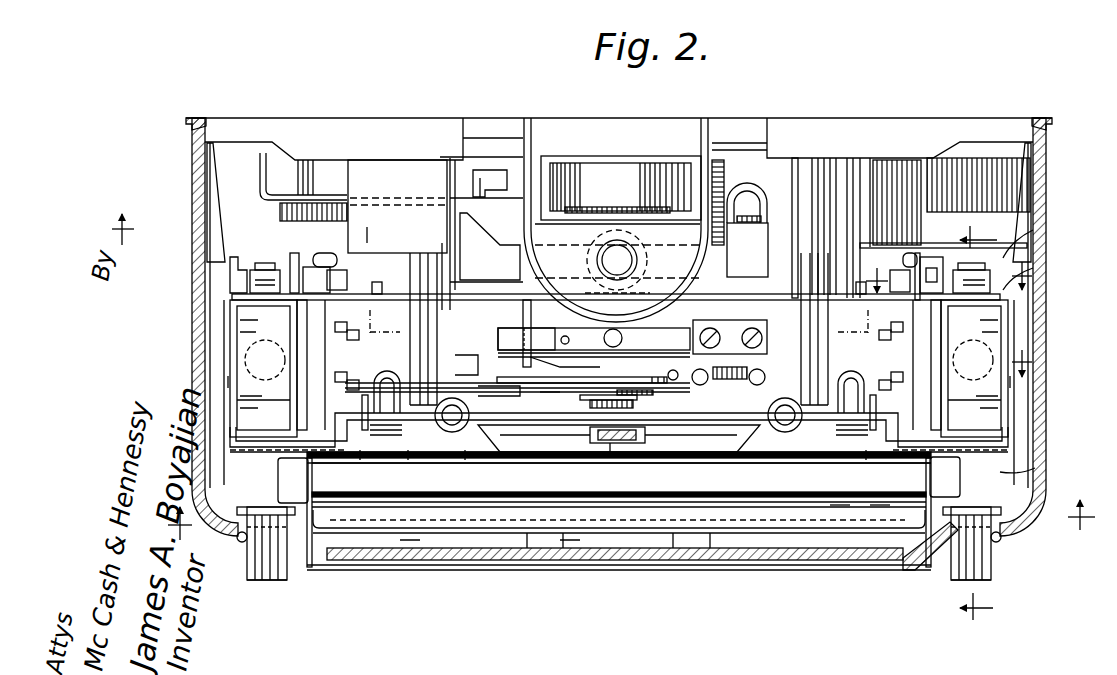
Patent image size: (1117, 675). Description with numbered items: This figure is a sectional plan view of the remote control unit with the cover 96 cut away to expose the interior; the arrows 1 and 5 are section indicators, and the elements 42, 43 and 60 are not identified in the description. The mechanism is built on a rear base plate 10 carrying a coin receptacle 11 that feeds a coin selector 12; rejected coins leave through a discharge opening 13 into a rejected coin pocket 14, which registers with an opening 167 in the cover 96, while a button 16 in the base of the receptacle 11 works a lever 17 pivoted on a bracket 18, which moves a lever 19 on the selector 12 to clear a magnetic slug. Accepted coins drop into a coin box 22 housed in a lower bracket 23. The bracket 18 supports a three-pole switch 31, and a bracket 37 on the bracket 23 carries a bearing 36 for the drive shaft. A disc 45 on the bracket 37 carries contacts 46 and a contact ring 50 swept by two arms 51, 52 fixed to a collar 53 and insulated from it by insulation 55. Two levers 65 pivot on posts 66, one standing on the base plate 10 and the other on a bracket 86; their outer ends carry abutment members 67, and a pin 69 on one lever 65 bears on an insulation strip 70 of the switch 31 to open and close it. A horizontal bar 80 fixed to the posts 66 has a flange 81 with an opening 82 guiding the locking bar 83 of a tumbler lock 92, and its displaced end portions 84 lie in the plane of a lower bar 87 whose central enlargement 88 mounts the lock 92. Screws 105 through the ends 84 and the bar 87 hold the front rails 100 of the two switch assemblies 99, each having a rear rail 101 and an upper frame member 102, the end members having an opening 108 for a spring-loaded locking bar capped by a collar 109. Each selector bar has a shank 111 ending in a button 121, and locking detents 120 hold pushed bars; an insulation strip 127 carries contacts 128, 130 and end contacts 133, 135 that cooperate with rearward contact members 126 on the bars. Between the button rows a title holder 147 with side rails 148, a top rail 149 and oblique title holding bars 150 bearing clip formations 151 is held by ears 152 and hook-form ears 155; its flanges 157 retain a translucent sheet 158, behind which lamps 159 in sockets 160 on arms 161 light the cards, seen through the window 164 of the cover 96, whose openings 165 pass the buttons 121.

The section line 1 is at (631, 527).
The section line 5 is at (123, 240).
The rear base plate 10 is at (907, 128).
The receptacle 11 is at (766, 393).
The coin selector 12 is at (256, 203).
The discharge opening 13 is at (949, 272).
The rejected coin pocket 14 is at (224, 196).
The button 16 is at (632, 260).
The lever 17 is at (747, 250).
The bracket 18 is at (739, 202).
The lever 19 is at (486, 234).
The coin box 22 is at (911, 228).
The lower bracket 23 is at (1040, 231).
The three-pole switch 31 is at (717, 352).
The bearing 36 is at (507, 307).
The bracket 37 is at (594, 350).
The switch box 42 is at (401, 225).
The plate 43 is at (447, 323).
The disc 45 is at (470, 365).
The contacts 46 is at (496, 397).
The contact ring 50 is at (547, 400).
The arm 51 is at (653, 400).
The arm 52 is at (583, 397).
The collar 53 is at (603, 407).
The insulation 55 is at (623, 387).
The cross bar 60 is at (693, 309).
The levers 65 is at (379, 300).
The posts 66 is at (420, 360).
The abutment members 67 is at (260, 325).
The pin 69 is at (531, 313).
The strip of insulation 70 is at (526, 339).
The horizontal bar 80 is at (717, 413).
The horizontal flange 81 is at (618, 438).
The opening 82 is at (647, 432).
The locking bar 83 is at (632, 445).
The end portions 84 is at (330, 463).
The bracket 86 is at (398, 229).
The horizontal bar 87 is at (788, 447).
The central enlargement 88 is at (472, 445).
The tumbler lock 92 is at (643, 540).
The cover 96 is at (1035, 470).
The switch assembly 99 is at (226, 382).
The front rail 100 is at (298, 433).
The rear rail 101 is at (208, 287).
The upper frame member 102 is at (246, 405).
The screws 105 is at (262, 480).
The opening 108 is at (340, 527).
The collar 109 is at (243, 358).
The shank portion 111 is at (252, 492).
The locking detents 120 is at (275, 265).
The button 121 is at (260, 580).
The contact member 126 is at (313, 263).
The strip of insulation 127 is at (325, 313).
The contacts 128 is at (327, 380).
The contact 130 is at (347, 330).
The contact 133 is at (347, 283).
The contact 135 is at (897, 253).
The title holder 147 is at (840, 514).
The side rails 148 is at (880, 560).
The top rail 149 is at (470, 457).
The title holding bars 150 is at (258, 486).
The clip formations 151 is at (337, 557).
The ears 152 is at (1063, 553).
The hook-form ears 155 is at (262, 578).
The flanges 157 is at (298, 600).
The sheet of translucent material 158 is at (413, 450).
The lamps 159 is at (445, 458).
The sockets 160 is at (410, 455).
The arms 161 is at (366, 452).
The window 164 is at (563, 560).
The openings 165 is at (247, 543).
The opening 167 is at (190, 160).